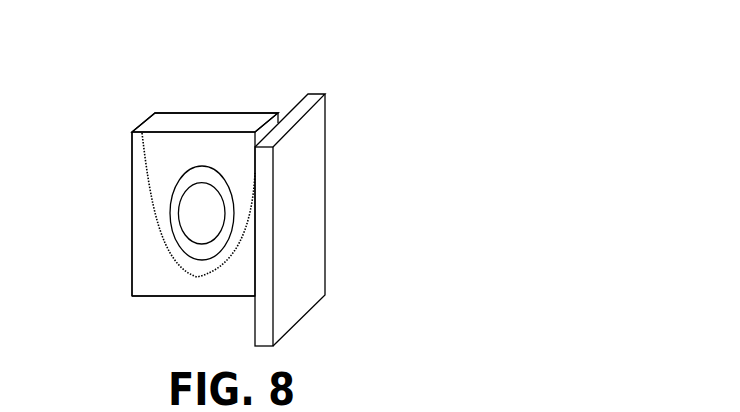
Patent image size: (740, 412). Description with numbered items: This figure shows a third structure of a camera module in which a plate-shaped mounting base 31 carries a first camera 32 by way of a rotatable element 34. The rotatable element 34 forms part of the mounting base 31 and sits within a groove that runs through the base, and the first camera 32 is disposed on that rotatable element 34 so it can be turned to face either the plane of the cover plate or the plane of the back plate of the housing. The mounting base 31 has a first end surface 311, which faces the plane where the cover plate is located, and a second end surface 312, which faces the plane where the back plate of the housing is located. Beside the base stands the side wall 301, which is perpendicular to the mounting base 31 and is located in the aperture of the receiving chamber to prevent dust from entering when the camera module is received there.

The mounting base 31 is at (138, 163).
The first end surface 311 is at (141, 248).
The second end surface 312 is at (225, 103).
The first camera 32 is at (203, 231).
The rotatable element 34 is at (193, 150).
The side wall 301 is at (298, 203).